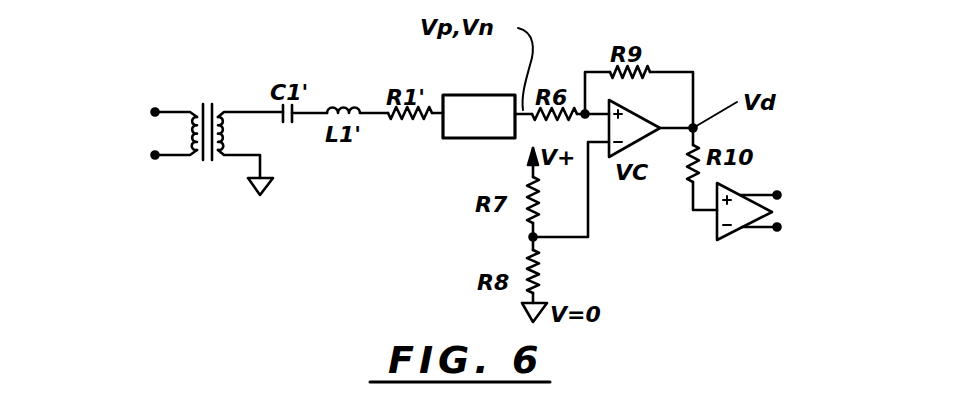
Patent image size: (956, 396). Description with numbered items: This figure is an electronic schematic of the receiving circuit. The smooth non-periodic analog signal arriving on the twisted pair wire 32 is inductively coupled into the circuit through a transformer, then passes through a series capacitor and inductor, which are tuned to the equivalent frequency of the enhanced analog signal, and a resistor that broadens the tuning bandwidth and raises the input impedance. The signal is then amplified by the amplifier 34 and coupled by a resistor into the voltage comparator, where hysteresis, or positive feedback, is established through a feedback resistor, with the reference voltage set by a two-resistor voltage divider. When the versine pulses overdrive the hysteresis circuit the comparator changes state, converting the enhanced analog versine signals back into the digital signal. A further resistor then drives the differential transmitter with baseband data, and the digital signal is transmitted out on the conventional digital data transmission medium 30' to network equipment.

The twisted pair wire 32 is at (128, 100).
The amplifier 34 is at (461, 95).
The digital data transmission medium 30' is at (795, 214).